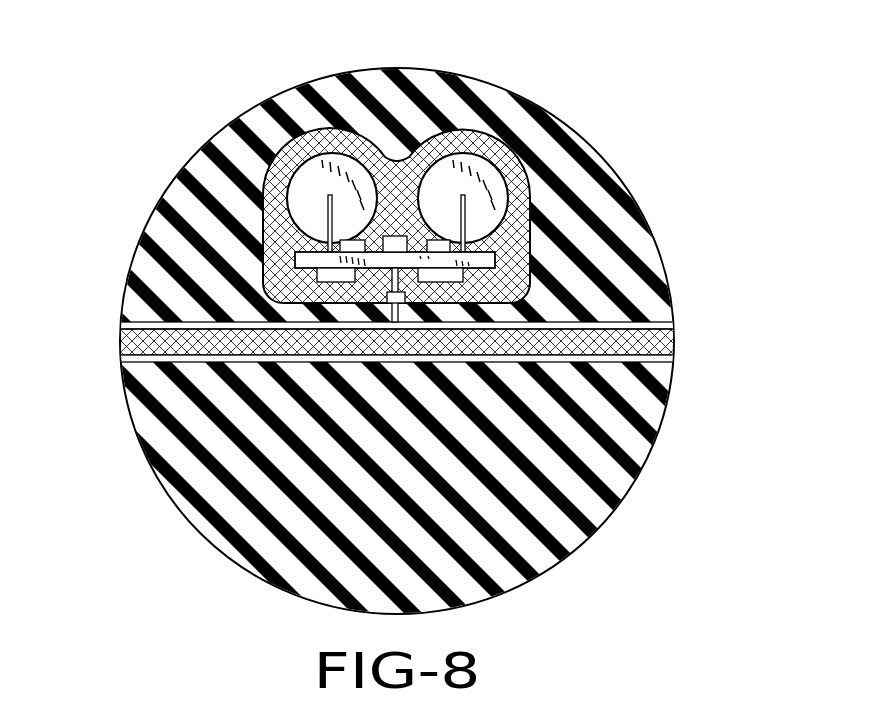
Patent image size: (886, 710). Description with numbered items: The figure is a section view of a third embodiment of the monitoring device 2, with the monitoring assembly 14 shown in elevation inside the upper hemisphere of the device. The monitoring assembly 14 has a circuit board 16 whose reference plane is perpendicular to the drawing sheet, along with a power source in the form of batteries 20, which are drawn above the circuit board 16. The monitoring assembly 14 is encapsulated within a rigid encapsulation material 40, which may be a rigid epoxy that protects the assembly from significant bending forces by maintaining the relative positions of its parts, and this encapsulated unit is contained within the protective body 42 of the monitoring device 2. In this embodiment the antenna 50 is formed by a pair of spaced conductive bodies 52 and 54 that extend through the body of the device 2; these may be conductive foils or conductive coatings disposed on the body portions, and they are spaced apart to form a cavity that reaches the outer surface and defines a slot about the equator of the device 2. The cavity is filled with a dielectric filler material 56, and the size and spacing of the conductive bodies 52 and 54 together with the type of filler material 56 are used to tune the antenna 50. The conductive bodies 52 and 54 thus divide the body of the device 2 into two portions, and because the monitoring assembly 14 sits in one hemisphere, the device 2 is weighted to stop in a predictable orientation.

The monitoring device 2 is at (550, 62).
The monitoring assembly 14 is at (290, 236).
The circuit board 16 is at (495, 260).
The batteries 20 is at (350, 170).
The rigid encapsulation material 40 is at (500, 153).
The protective body 42 is at (233, 152).
The antenna 50 is at (398, 342).
The conductive body 52 is at (376, 308).
The conductive body 54 is at (376, 376).
The dielectric filler material 56 is at (361, 342).